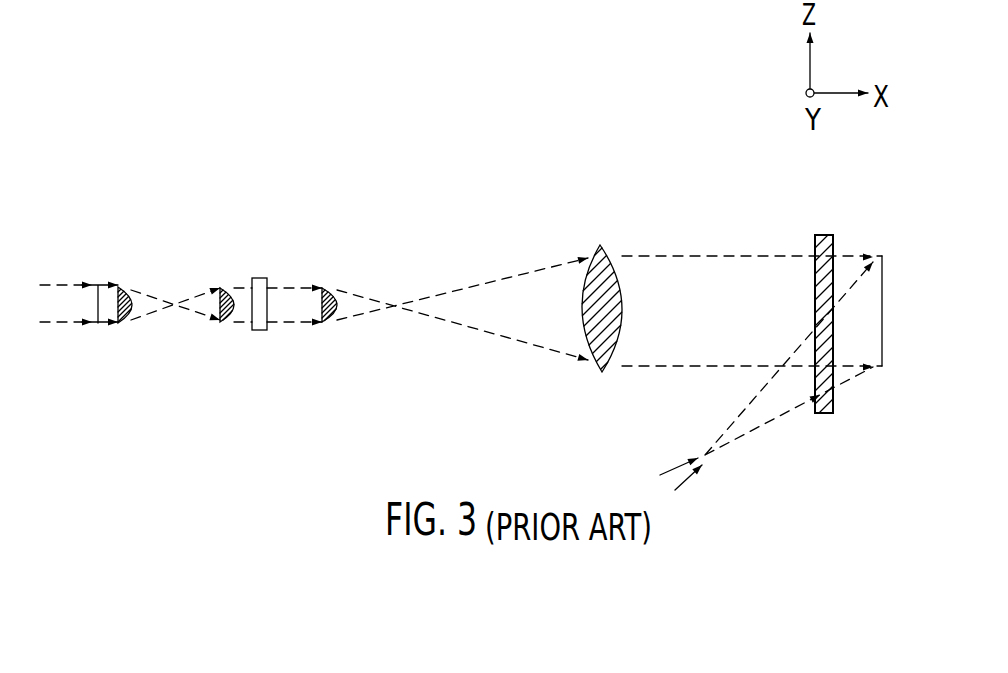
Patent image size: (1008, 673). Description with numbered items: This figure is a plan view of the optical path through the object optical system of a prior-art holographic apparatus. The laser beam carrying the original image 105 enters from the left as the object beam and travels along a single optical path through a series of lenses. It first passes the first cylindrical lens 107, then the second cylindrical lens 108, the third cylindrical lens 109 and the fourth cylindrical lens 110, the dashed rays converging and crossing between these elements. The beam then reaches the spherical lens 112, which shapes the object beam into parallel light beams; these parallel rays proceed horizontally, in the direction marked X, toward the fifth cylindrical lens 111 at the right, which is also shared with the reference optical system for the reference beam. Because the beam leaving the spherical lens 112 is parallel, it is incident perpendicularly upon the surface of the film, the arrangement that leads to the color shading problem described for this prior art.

The original image 105 is at (98, 302).
The first cylindrical lens 107 is at (125, 324).
The second cylindrical lens 108 is at (232, 289).
The third cylindrical lens 109 is at (258, 331).
The fourth cylindrical lens 110 is at (333, 288).
The fifth cylindrical lens 111 is at (820, 235).
The spherical lens 112 is at (596, 244).